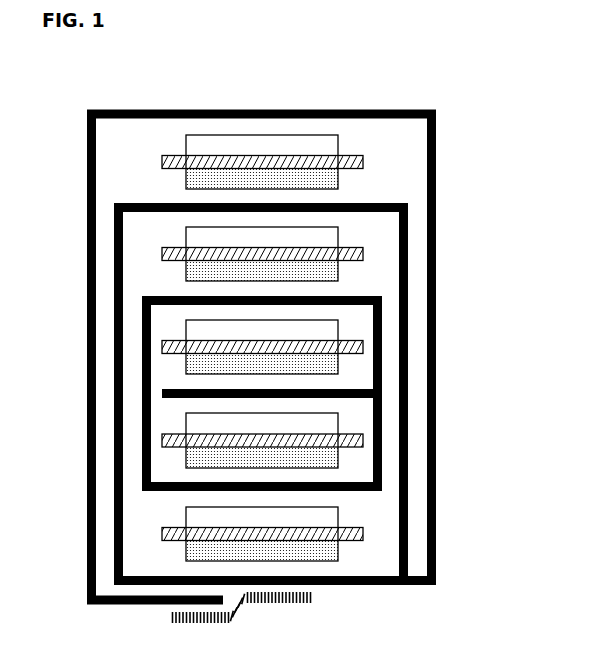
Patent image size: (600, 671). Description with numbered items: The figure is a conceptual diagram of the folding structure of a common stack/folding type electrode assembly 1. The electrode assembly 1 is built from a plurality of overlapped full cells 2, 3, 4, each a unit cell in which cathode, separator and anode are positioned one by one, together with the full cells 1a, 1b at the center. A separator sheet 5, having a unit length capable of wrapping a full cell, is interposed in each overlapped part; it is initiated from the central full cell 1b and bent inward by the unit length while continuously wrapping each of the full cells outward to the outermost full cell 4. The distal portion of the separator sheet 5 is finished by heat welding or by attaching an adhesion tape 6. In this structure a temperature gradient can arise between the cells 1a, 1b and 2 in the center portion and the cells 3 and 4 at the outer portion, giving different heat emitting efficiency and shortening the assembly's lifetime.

The electrode assembly 1 is at (78, 91).
The full cell 1a is at (332, 423).
The central full cell 1b is at (330, 330).
The full cell 2 is at (333, 238).
The full cell 3 is at (332, 517).
The outermost full cell 4 is at (332, 143).
The separator sheet 5 is at (87, 366).
The adhesion tape 6 is at (250, 605).